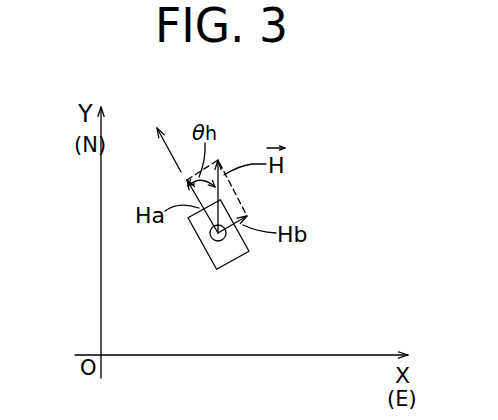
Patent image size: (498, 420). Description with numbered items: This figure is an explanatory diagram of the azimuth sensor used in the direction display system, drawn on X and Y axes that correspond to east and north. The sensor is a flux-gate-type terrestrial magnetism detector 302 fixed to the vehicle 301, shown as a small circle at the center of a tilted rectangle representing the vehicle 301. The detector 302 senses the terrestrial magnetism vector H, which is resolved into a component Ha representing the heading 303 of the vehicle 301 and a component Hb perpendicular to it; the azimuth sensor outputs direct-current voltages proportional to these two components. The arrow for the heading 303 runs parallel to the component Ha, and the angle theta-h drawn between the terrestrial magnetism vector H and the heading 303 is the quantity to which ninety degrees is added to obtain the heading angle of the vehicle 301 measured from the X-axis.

The vehicle 301 is at (203, 252).
The flux-gate-type terrestrial magnetism detector 302 is at (223, 241).
The heading 303 is at (176, 165).